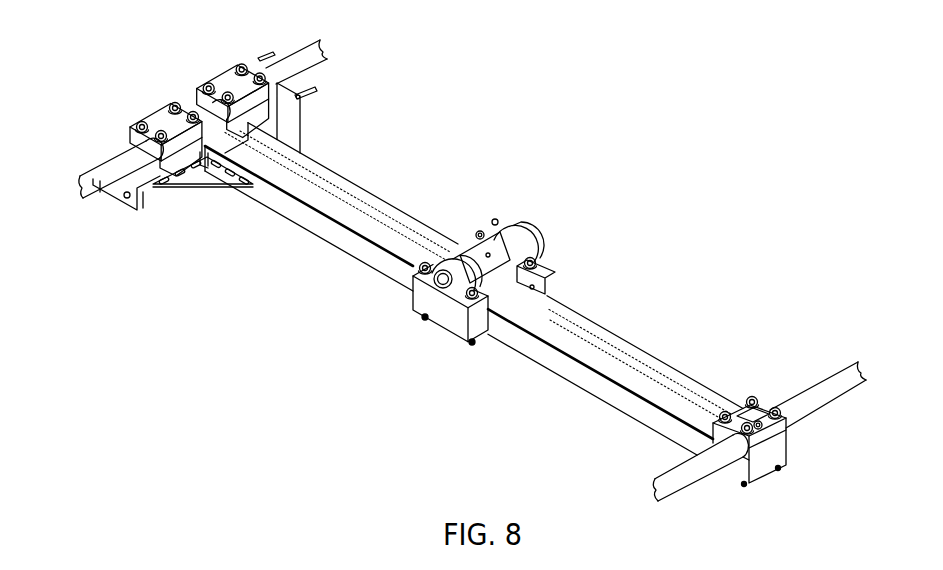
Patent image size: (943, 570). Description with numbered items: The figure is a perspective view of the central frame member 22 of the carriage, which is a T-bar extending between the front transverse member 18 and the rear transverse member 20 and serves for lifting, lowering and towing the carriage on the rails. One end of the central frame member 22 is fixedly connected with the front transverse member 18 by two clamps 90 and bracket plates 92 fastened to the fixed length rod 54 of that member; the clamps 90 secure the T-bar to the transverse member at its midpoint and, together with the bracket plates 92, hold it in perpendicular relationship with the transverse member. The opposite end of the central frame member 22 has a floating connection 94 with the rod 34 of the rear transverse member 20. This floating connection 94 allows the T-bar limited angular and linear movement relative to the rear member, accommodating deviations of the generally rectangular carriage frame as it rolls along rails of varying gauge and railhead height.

The front transverse member 18 is at (346, 92).
The rear transverse member 20 is at (813, 348).
The central frame member 22 is at (537, 326).
The rod 34 is at (652, 483).
The fixed length rod 54 is at (92, 197).
The clamps 90 is at (167, 116).
The bracket plates 92 is at (300, 135).
The floating connection 94 is at (734, 382).